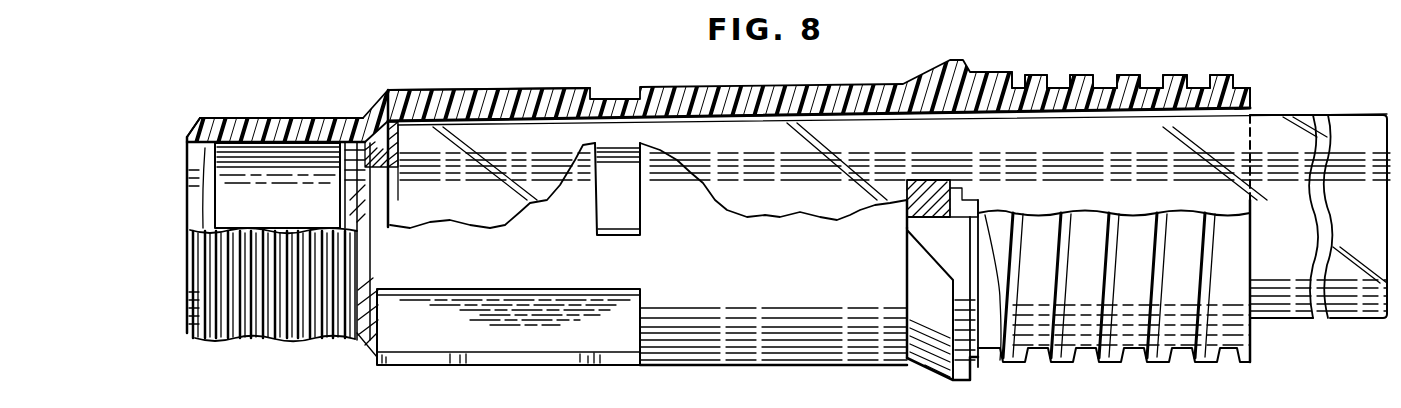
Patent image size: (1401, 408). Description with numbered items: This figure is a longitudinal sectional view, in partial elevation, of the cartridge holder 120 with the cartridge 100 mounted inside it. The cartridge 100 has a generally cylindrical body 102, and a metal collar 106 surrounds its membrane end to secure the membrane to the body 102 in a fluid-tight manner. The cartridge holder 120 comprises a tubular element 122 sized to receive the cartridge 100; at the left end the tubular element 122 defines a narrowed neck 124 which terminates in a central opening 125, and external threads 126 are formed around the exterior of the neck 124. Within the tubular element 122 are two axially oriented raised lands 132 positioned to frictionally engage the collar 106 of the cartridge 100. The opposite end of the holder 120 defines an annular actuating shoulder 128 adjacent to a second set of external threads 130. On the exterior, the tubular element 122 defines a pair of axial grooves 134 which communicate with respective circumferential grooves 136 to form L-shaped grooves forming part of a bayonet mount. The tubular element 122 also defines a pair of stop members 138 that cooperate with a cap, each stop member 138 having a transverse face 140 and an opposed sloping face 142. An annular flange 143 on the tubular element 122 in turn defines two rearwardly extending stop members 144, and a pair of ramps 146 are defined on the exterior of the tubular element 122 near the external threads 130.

The cartridge 100 is at (1003, 141).
The body 102 is at (485, 135).
The collar 106 is at (307, 153).
The cartridge holder 120 is at (540, 82).
The tubular element 122 is at (427, 90).
The narrowed neck 124 is at (300, 340).
The central opening 125 is at (190, 180).
The external threads 126 is at (255, 335).
The annular actuating shoulder 128 is at (1252, 92).
The second set of external threads 130 is at (1173, 75).
The raised lands 132 is at (278, 133).
The axial grooves 134 is at (448, 355).
The circumferential grooves 136 is at (628, 90).
The stop members 138 is at (907, 228).
The transverse face 140 is at (930, 195).
The sloping face 142 is at (930, 258).
The annular flange 143 is at (935, 362).
The rearwardly extending stop members 144 is at (997, 300).
The ramps 146 is at (1254, 406).